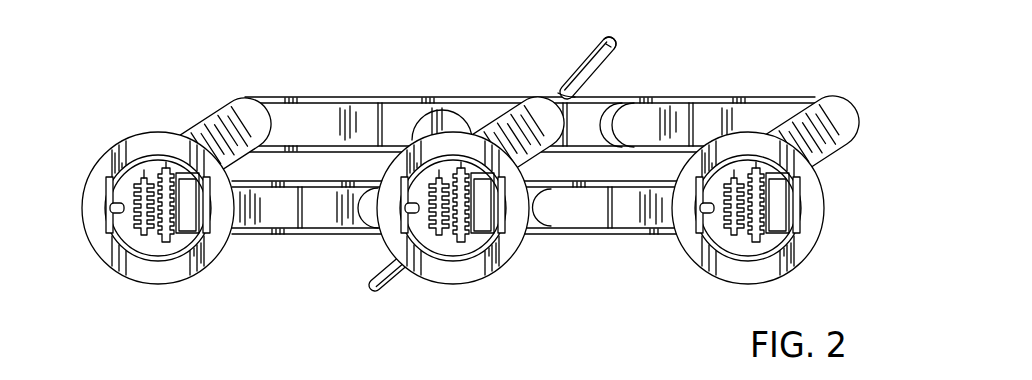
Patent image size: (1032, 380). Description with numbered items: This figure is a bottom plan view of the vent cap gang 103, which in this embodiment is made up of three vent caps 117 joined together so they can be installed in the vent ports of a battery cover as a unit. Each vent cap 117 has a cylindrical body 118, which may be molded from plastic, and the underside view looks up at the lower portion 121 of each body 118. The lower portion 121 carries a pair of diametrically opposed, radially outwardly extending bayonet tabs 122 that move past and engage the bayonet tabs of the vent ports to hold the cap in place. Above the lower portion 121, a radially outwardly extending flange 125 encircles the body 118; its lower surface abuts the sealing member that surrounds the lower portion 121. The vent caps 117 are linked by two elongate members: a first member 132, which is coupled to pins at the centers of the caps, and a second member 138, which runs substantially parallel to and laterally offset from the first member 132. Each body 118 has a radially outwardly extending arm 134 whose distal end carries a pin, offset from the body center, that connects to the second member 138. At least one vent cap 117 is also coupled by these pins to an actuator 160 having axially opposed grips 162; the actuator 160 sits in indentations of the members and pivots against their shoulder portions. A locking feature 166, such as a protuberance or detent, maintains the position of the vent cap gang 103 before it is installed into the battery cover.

The vent cap gang 103 is at (318, 87).
The vent cap 117 is at (109, 136).
The cylindrical body 118 is at (85, 190).
The lower portion 121 is at (163, 155).
The bayonet tabs 122 is at (104, 207).
The flange 125 is at (100, 258).
The first member 132 is at (593, 218).
The arm 134 is at (232, 107).
The second member 138 is at (648, 120).
The actuator 160 is at (583, 65).
The grips 162 is at (611, 43).
The locking feature 166 is at (562, 90).